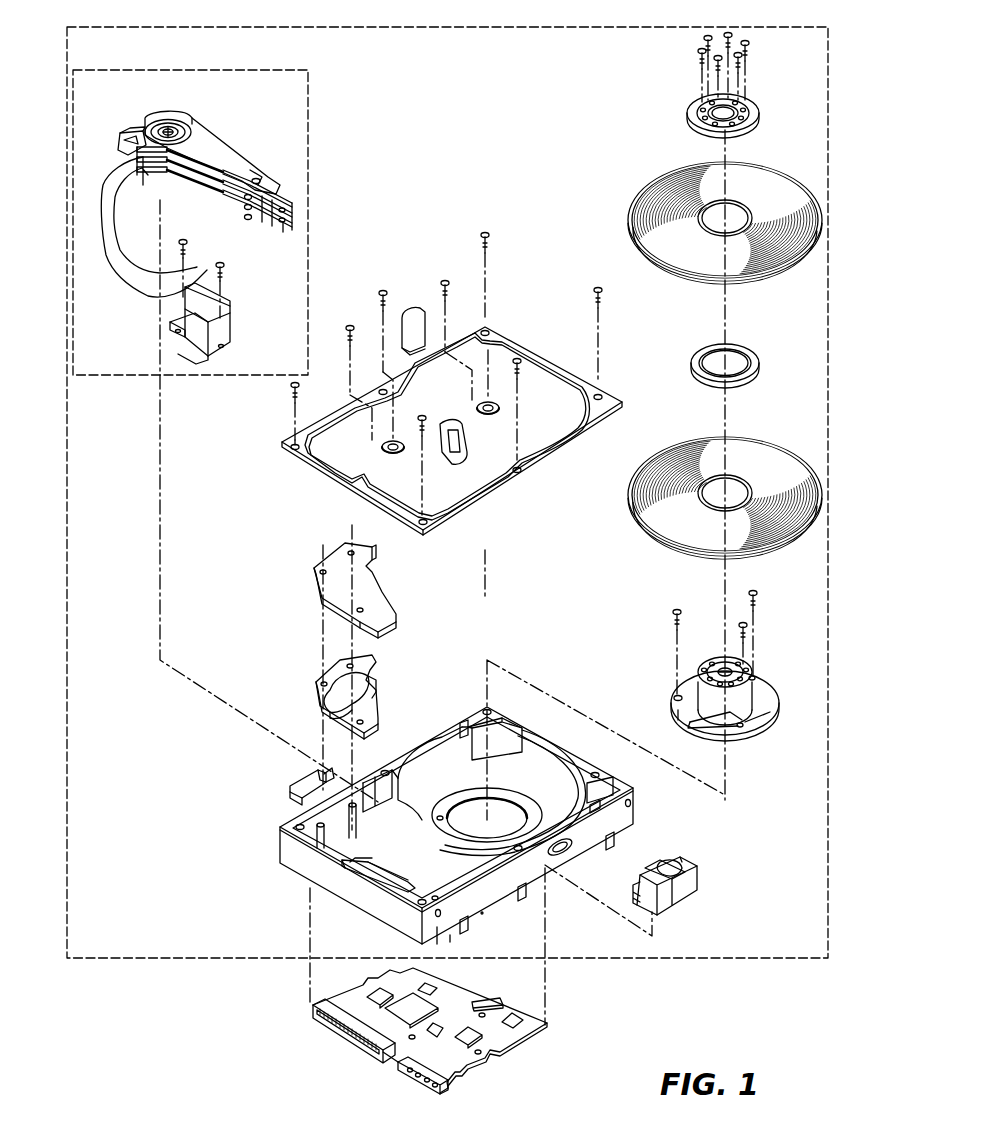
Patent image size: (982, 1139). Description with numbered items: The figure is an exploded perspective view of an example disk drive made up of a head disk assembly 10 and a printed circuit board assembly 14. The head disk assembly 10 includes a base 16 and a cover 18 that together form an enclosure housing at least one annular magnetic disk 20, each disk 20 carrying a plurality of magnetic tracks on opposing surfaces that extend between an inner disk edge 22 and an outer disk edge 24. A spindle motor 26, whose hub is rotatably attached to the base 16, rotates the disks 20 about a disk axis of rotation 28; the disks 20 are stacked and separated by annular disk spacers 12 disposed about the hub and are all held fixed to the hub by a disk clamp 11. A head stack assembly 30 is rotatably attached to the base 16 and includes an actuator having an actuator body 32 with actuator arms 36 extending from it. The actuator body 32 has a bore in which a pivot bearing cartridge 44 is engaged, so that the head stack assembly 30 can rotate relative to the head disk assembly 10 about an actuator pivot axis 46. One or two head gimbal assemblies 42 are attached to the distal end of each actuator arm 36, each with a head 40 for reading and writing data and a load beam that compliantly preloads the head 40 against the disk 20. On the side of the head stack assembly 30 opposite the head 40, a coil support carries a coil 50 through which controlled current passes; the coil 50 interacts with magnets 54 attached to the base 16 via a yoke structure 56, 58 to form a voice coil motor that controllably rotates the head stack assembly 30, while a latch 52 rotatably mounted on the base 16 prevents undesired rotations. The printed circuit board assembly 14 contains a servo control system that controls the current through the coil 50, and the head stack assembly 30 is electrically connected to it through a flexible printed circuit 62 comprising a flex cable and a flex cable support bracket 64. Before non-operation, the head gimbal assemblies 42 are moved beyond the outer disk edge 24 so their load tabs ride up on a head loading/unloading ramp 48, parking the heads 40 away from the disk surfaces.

The head disk assembly 10 is at (640, 958).
The disk clamp 11 is at (752, 96).
The annular disk spacer 12 is at (690, 365).
The printed circuit board assembly 14 is at (520, 1045).
The base 16 is at (580, 862).
The cover 18 is at (489, 326).
The annular magnetic disk 20 is at (776, 165).
The inner disk edge 22 is at (745, 215).
The outer disk edge 24 is at (670, 275).
The spindle motor 26 is at (765, 725).
The disk axis of rotation 28 is at (728, 298).
The head stack assembly 30 is at (106, 378).
The actuator body 32 is at (165, 120).
The actuator arm 36 is at (213, 152).
The head 40 is at (283, 228).
The head gimbal assembly 42 is at (272, 192).
The pivot bearing cartridge 44 is at (184, 120).
The actuator pivot axis 46 is at (160, 553).
The head loading/unloading ramp 48 is at (700, 882).
The coil 50 is at (128, 134).
The latch 52 is at (290, 788).
The magnet 54 is at (375, 684).
The yoke structure 56 is at (316, 688).
The yoke structure 58 is at (320, 595).
The flexible printed circuit 62 is at (132, 288).
The flex cable support bracket 64 is at (230, 340).